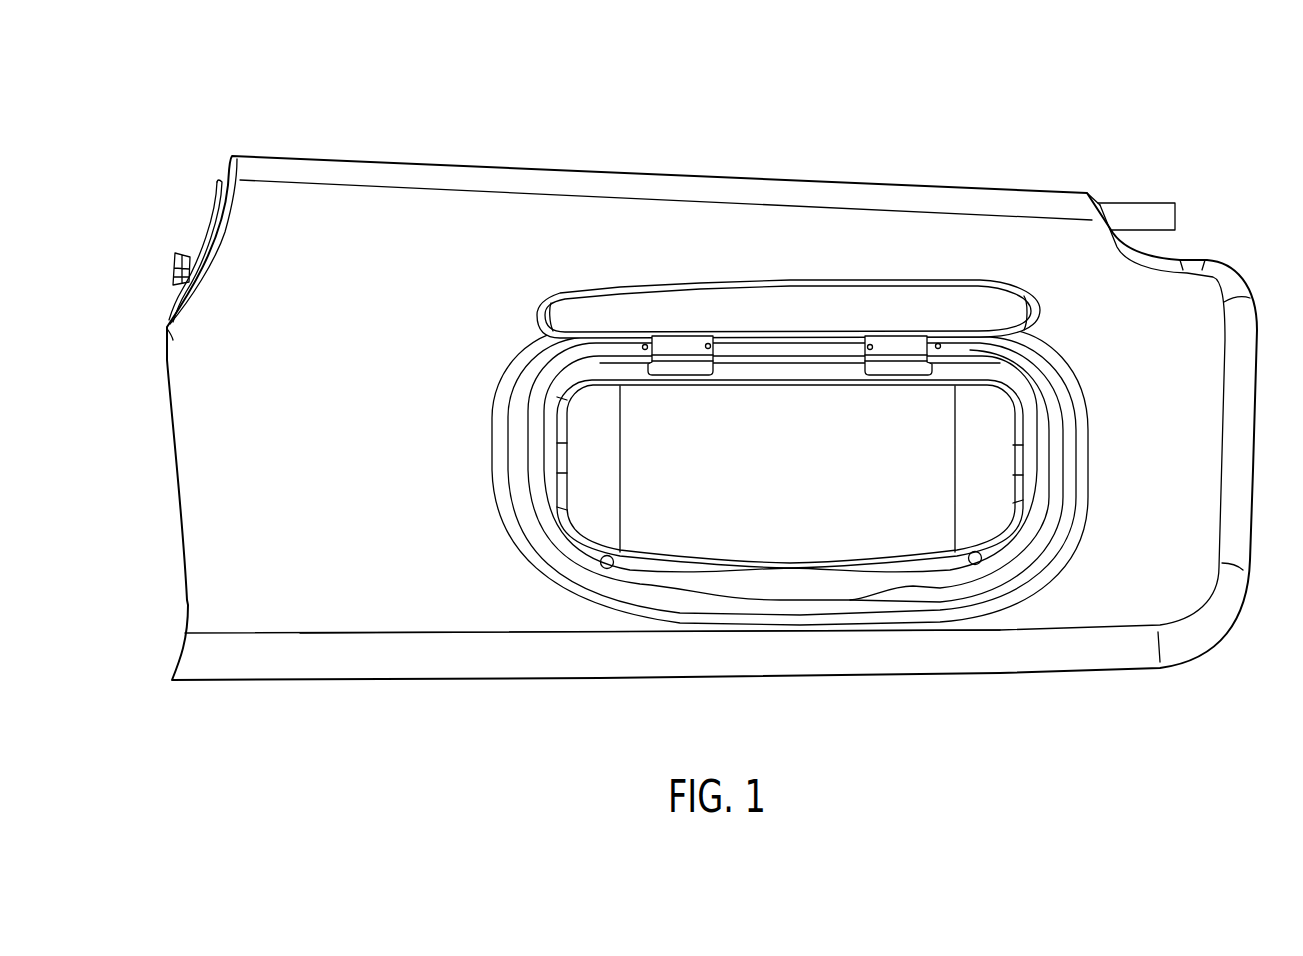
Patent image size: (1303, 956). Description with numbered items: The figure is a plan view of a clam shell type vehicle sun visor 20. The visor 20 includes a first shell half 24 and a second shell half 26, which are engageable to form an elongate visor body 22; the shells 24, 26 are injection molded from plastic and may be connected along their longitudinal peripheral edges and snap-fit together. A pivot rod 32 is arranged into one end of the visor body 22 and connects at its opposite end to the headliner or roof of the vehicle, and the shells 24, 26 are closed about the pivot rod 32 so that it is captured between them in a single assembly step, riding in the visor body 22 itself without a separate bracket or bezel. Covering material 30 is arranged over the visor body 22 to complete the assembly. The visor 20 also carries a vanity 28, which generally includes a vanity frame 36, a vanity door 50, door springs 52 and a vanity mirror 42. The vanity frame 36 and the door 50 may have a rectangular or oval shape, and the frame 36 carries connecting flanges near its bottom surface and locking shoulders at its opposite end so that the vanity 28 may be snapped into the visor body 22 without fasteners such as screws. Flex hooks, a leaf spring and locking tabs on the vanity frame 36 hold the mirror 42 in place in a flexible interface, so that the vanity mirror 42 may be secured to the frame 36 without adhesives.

The visor 20 is at (338, 129).
The visor body 22 is at (805, 245).
The first shell half 24 is at (433, 212).
The second shell half 26 is at (212, 247).
The vanity 28 is at (496, 603).
The covering material 30 is at (200, 600).
The pivot rod 32 is at (1136, 216).
The vanity frame 36 is at (1065, 384).
The vanity mirror 42 is at (884, 532).
The vanity door 50 is at (850, 290).
The door springs 52 is at (937, 358).